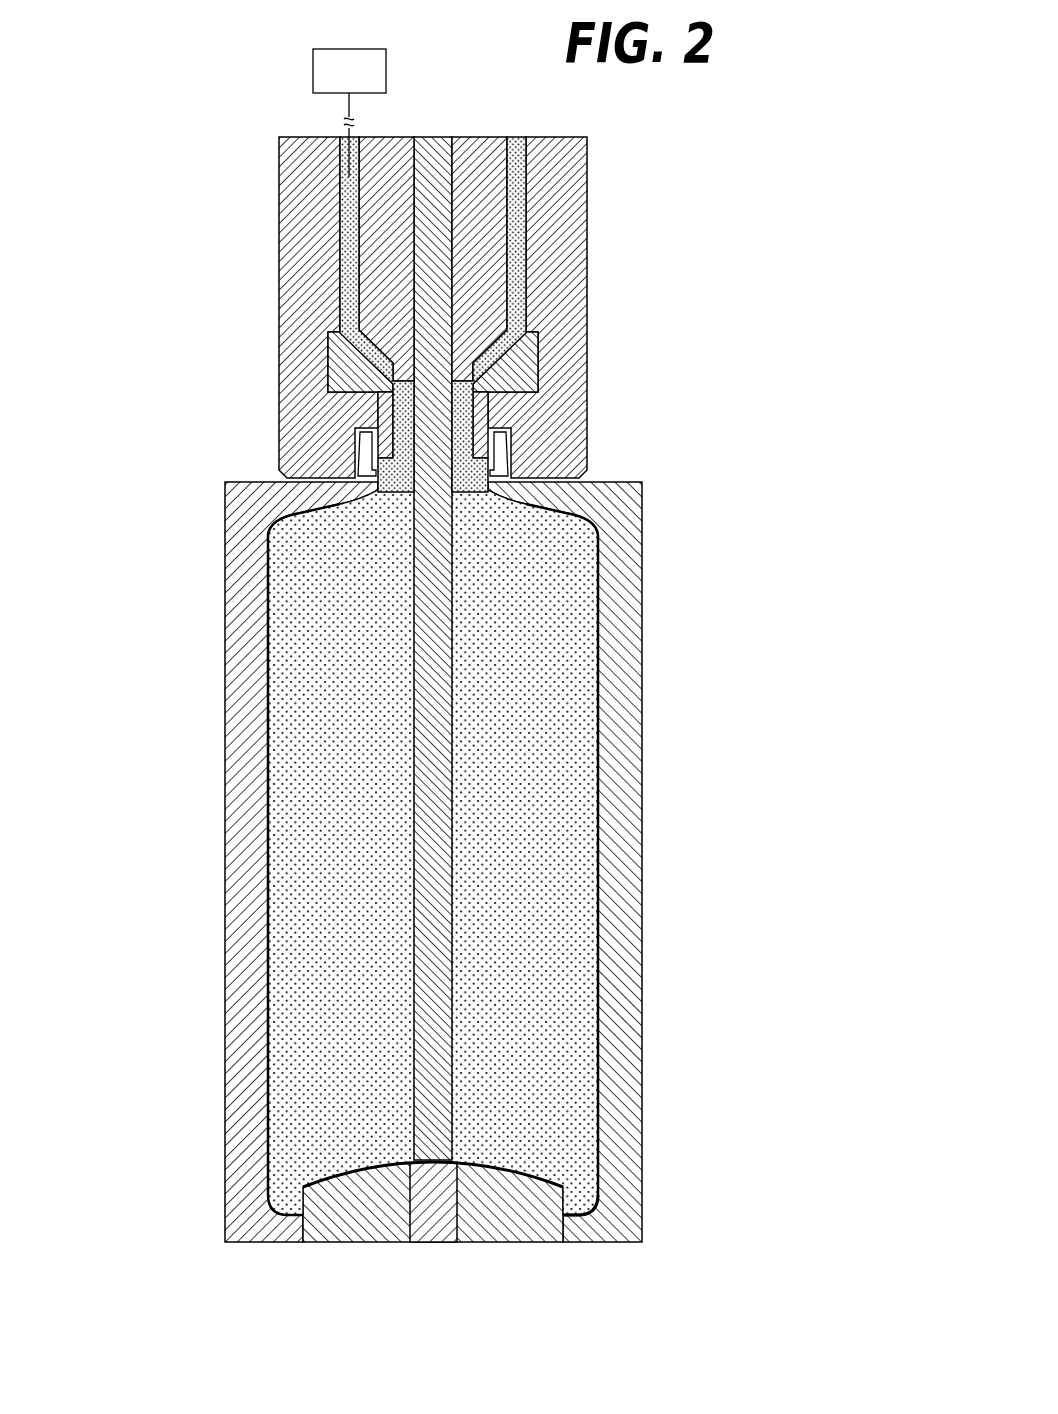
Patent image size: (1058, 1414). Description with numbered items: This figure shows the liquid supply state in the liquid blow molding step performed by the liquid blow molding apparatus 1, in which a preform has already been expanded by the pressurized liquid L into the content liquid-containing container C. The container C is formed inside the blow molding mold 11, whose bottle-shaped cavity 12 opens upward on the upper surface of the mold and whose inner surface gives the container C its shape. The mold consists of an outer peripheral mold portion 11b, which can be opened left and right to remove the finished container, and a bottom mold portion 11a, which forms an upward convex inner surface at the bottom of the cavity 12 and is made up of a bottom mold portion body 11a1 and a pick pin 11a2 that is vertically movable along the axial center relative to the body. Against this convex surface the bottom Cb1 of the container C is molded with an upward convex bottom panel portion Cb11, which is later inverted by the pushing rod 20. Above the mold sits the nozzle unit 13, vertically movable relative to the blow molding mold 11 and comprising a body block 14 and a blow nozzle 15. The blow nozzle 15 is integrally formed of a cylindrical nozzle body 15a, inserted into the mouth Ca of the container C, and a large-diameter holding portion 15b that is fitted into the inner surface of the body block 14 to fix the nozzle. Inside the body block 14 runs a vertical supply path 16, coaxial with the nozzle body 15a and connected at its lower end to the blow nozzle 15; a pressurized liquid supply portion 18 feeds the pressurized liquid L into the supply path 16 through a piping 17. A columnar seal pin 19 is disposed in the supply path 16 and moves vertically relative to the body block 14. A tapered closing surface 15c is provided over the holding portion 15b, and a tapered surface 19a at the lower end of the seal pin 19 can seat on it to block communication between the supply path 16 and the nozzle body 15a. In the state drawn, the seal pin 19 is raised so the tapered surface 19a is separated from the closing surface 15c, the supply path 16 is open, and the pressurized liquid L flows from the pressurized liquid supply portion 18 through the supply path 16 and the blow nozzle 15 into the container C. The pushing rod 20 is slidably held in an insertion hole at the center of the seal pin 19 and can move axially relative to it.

The liquid blow molding apparatus 1 is at (652, 157).
The blow molding mold 11 is at (482, 856).
The bottom mold portion 11a is at (433, 1229).
The bottom mold portion body 11a1 is at (503, 1222).
The pick pin 11a2 is at (433, 1218).
The outer peripheral mold portion 11b is at (620, 808).
The cavity 12 is at (596, 892).
The nozzle unit 13 is at (490, 307).
The body block 14 is at (573, 348).
The blow nozzle 15 is at (578, 314).
The nozzle body 15a is at (488, 418).
The holding portion 15b is at (512, 372).
The closing surface 15c is at (498, 342).
The supply path 16 is at (348, 202).
The piping 17 is at (349, 106).
The pressurized liquid supply portion 18 is at (328, 73).
The seal pin 19 is at (383, 260).
The tapered surface 19a is at (360, 365).
The pushing rod 20 is at (432, 690).
The pressurized liquid L is at (545, 620).
The content liquid-containing container C is at (517, 453).
The mouth Ca is at (496, 455).
The bottom Cb1 is at (585, 1217).
The bottom panel portion Cb11 is at (520, 1147).